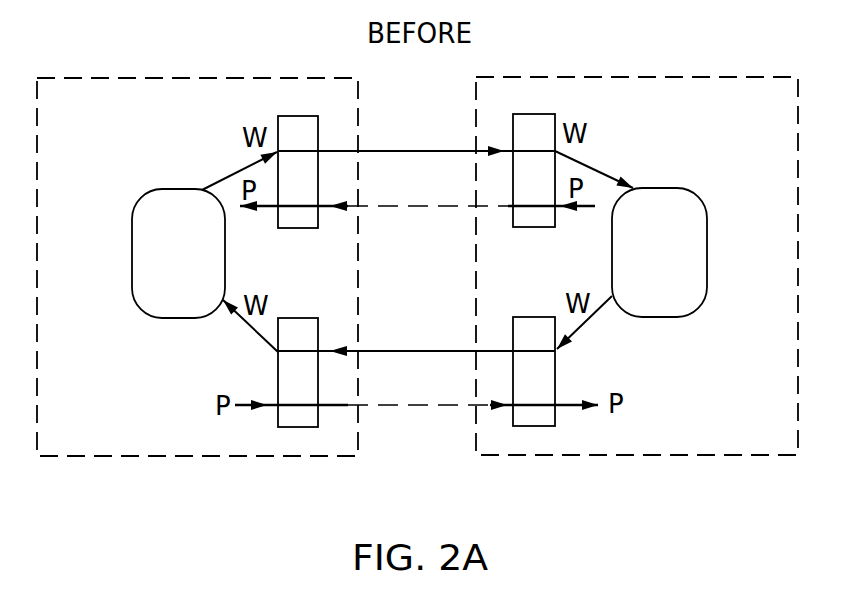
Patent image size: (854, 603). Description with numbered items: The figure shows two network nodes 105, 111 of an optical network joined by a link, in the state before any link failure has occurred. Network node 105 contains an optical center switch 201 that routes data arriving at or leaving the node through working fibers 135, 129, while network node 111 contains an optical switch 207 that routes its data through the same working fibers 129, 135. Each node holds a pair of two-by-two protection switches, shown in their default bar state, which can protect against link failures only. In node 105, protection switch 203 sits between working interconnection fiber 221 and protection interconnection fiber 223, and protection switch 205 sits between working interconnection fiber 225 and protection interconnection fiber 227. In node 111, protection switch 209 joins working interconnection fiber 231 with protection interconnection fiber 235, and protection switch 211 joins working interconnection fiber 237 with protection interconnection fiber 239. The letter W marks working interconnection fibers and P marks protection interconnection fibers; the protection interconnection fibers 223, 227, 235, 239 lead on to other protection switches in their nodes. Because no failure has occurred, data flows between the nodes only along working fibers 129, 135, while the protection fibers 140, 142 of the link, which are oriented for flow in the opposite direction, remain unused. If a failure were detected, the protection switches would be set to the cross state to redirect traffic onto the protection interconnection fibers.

The network node 105 is at (106, 78).
The network node 111 is at (720, 73).
The optical center switch 201 is at (132, 245).
The optical switch 207 is at (708, 238).
The protection switch 203 is at (302, 115).
The protection switch 205 is at (302, 428).
The protection switch 209 is at (532, 113).
The protection switch 211 is at (537, 427).
The working fiber 129 is at (425, 149).
The working fiber 135 is at (420, 350).
The protection fiber 140 is at (405, 208).
The protection fiber 142 is at (407, 408).
The working interconnection fiber 221 is at (242, 170).
The protection interconnection fiber 223 is at (263, 209).
The working interconnection fiber 225 is at (243, 323).
The protection interconnection fiber 227 is at (243, 408).
The working interconnection fiber 231 is at (583, 163).
The protection interconnection fiber 235 is at (588, 207).
The working interconnection fiber 237 is at (590, 320).
The protection interconnection fiber 239 is at (570, 407).